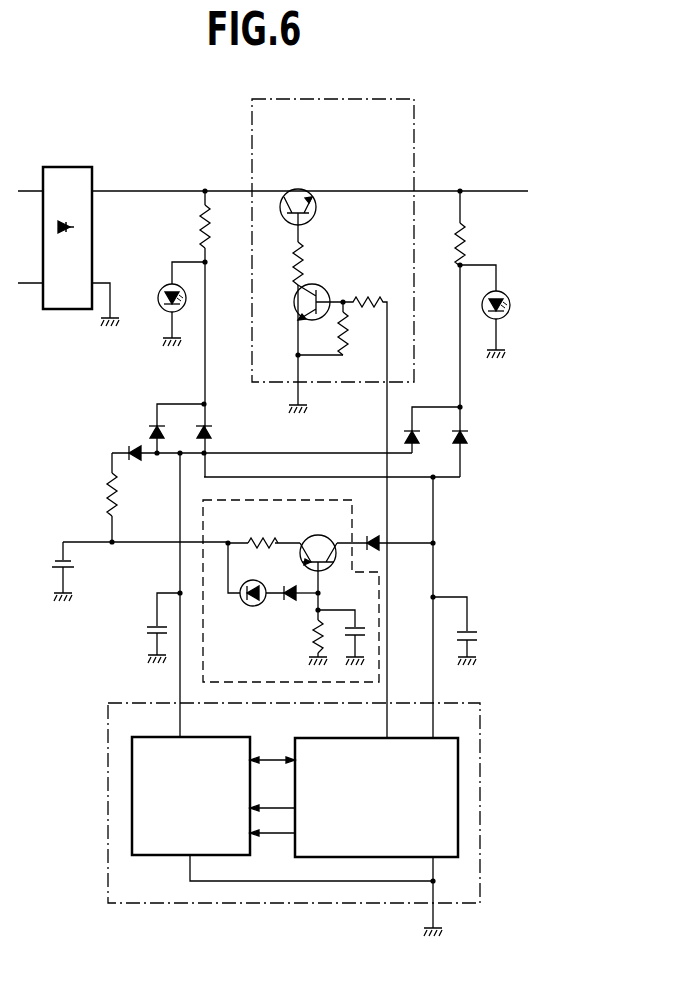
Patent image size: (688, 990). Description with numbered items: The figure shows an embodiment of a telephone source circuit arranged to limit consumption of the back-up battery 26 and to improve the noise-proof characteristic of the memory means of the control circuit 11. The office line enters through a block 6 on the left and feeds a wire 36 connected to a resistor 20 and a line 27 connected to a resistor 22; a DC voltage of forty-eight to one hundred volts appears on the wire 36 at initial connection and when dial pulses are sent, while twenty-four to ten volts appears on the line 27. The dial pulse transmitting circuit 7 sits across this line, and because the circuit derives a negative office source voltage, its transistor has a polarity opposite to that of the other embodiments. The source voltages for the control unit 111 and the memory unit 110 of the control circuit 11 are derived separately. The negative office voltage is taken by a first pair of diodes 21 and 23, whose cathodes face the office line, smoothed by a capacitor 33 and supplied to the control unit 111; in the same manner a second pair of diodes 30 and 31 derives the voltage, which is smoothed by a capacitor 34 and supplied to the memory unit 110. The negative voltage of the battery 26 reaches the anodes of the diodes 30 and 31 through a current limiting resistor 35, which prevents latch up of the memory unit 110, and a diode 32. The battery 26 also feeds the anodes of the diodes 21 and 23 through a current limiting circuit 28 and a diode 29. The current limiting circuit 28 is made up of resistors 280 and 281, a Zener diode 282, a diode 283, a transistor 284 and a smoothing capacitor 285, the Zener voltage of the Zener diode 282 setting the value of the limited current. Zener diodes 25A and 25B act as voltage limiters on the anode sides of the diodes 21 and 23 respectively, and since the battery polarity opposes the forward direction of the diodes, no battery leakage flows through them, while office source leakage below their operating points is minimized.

The hybrid circuit 6 is at (78, 167).
The wire 36 is at (163, 191).
The line 27 is at (504, 191).
The resistor 20 is at (200, 232).
The Zener diode 25A is at (172, 285).
The dial pulse transmitting circuit 7 is at (415, 129).
The resistor 22 is at (466, 240).
The Zener diode 25B is at (500, 291).
The diode 30 is at (152, 424).
The diode 21 is at (212, 432).
The diode 31 is at (400, 437).
The diode 23 is at (467, 436).
The diode 32 is at (138, 459).
The current limiting resistor 35 is at (104, 490).
The back-up battery 26 is at (50, 563).
The capacitor 34 is at (143, 633).
The capacitor 33 is at (487, 634).
The current limiting circuit 28 is at (343, 591).
The resistor 280 is at (265, 538).
The transistor 284 is at (300, 556).
The diode 29 is at (373, 535).
The Zener diode 282 is at (245, 605).
The diode 283 is at (285, 607).
The smoothing capacitor 285 is at (371, 626).
The resistor 281 is at (312, 647).
The control circuit 11 is at (326, 817).
The memory unit 110 is at (145, 856).
The control unit 111 is at (445, 858).